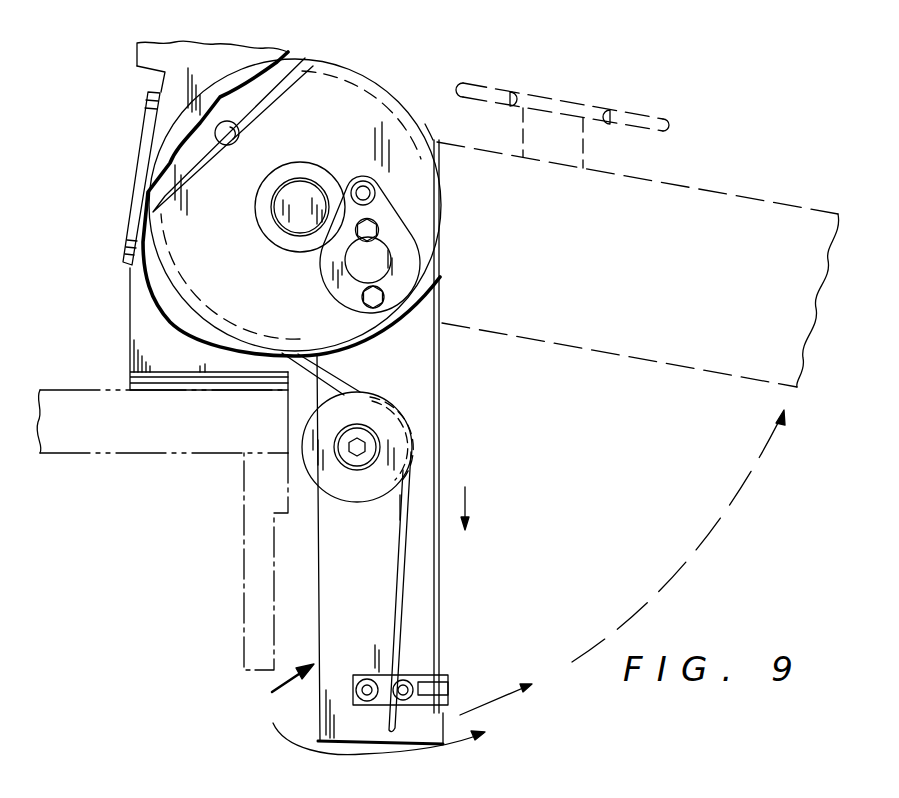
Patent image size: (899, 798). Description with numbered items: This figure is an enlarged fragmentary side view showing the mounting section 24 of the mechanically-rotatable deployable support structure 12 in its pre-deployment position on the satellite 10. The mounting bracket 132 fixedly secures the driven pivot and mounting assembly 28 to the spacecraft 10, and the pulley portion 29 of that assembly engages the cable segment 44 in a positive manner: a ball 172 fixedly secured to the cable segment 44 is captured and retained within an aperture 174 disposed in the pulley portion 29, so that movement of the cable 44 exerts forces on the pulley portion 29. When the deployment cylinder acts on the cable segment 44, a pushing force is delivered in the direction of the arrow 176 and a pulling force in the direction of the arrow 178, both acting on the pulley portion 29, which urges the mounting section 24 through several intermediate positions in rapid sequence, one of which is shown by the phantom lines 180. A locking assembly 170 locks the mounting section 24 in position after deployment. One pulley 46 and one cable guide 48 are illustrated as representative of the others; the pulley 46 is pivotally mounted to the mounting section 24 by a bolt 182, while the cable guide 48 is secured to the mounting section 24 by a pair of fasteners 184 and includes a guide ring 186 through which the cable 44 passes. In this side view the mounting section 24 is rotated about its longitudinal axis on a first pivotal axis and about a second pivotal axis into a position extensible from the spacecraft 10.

The satellite 10 is at (165, 453).
The mechanically-rotatable deployable support structure 12 is at (278, 689).
The mounting section 24 is at (366, 620).
The driven pivot and mounting assembly 28 is at (383, 49).
The pulley portion 29 is at (348, 122).
The cable segment 44 is at (443, 596).
The pulley 46 is at (335, 491).
The cable guide 48 is at (448, 675).
The mounting bracket 132 is at (135, 326).
The locking assembly 170 is at (320, 285).
The ball 172 is at (240, 133).
The aperture 174 is at (228, 146).
The arrow 176 is at (387, 520).
The arrow 178 is at (465, 497).
The phantom lines 180 is at (767, 384).
The bolt 182 is at (358, 440).
The fasteners 184 is at (365, 701).
The guide ring 186 is at (448, 688).